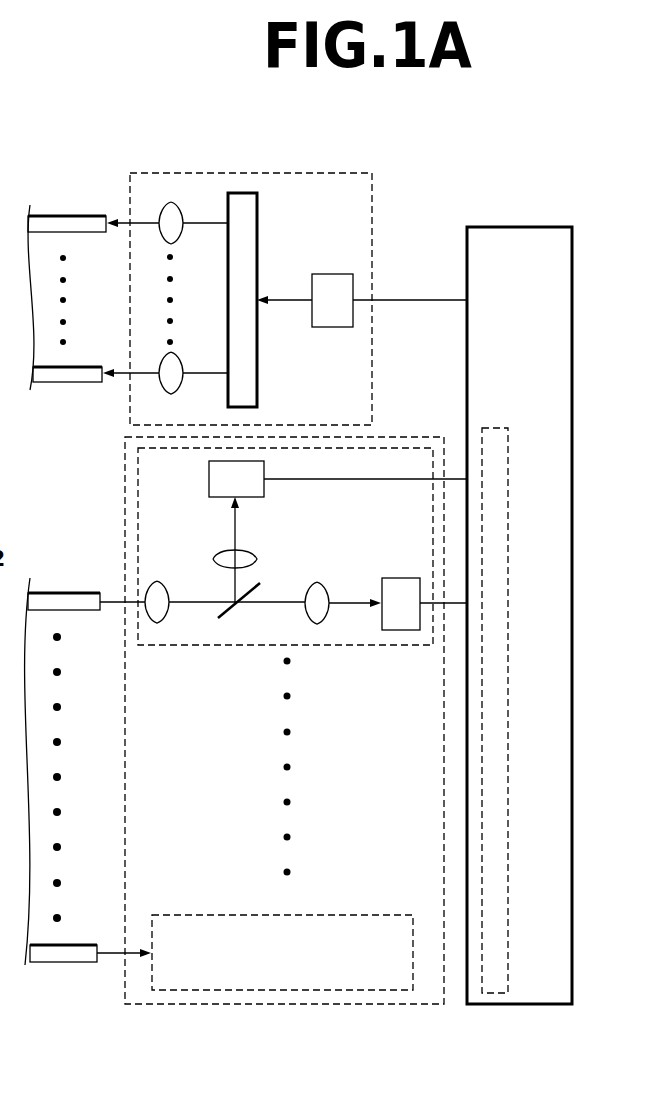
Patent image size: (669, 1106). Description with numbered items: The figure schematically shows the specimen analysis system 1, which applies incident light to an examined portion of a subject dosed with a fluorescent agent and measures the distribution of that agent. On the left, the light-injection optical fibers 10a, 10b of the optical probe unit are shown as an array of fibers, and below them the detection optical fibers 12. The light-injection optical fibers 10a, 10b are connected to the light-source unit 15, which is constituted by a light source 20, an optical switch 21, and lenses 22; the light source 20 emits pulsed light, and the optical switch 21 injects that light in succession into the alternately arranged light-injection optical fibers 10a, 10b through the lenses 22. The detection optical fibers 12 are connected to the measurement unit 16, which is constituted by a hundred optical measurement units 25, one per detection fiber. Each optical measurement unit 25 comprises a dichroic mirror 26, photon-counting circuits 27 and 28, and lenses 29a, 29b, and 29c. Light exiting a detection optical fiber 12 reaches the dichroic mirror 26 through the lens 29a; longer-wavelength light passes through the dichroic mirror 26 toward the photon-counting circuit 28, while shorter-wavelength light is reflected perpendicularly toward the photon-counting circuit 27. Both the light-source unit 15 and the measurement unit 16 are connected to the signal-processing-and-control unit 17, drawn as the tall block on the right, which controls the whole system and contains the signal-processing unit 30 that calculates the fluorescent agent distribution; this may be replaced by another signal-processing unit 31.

The specimen analysis system 1 is at (124, 80).
The light-injection optical fibers 10a is at (70, 216).
The light-injection optical fibers 10b is at (74, 266).
The detection optical fibers 12 is at (68, 962).
The light-source unit 15 is at (342, 173).
The measurement unit 16 is at (262, 1004).
The signal-processing-and-control unit 17 is at (519, 651).
The light source 20 is at (332, 274).
The optical switch 21 is at (243, 193).
The lenses 22 is at (171, 202).
The optical measurement units 25 is at (340, 645).
The dichroic mirror 26 is at (248, 596).
The photon-counting circuit 27 is at (209, 470).
The photon-counting circuit 28 is at (398, 578).
The lens 29a is at (158, 581).
The lens 29b is at (237, 550).
The lens 29c is at (318, 582).
The signal-processing unit 30 is at (519, 678).
The signal-processing unit 31 is at (495, 428).